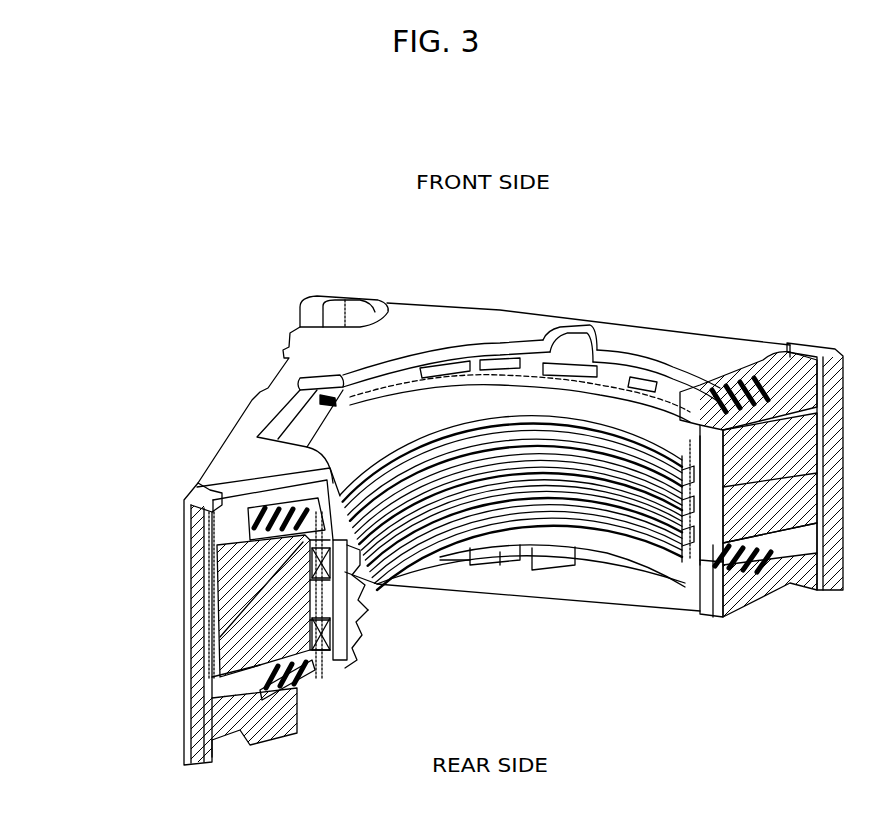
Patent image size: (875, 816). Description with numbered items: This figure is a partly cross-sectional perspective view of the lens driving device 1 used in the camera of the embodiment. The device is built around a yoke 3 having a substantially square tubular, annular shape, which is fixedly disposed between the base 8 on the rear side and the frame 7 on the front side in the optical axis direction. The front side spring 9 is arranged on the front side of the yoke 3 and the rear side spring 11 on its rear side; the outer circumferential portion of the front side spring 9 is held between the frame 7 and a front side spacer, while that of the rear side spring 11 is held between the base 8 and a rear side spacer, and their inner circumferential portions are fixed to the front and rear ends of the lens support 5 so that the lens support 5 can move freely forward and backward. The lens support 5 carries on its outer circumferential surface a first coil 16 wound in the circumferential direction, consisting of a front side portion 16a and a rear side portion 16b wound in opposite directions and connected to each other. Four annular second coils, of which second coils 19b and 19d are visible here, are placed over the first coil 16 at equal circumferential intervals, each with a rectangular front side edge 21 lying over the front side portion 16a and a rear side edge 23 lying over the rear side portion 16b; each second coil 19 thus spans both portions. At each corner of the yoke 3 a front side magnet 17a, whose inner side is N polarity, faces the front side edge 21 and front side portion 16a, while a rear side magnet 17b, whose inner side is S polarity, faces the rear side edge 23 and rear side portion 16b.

The lens driving device 1 is at (697, 236).
The yoke 3 is at (183, 617).
The lens support 5 is at (683, 593).
The frame 7 is at (773, 355).
The base 8 is at (757, 613).
The front side spring 9 is at (617, 358).
The rear side spring 11 is at (733, 613).
The first coil 16 is at (446, 623).
The front side portion 16a is at (367, 603).
The rear side portion 16b is at (353, 640).
The front side magnet 17a is at (200, 538).
The rear side magnet 17b is at (207, 640).
The second coil 19 is at (720, 386).
The second coil 19b is at (300, 500).
The second coil 19d is at (734, 396).
The front side edge 21 is at (207, 590).
The rear side edge 23 is at (312, 680).